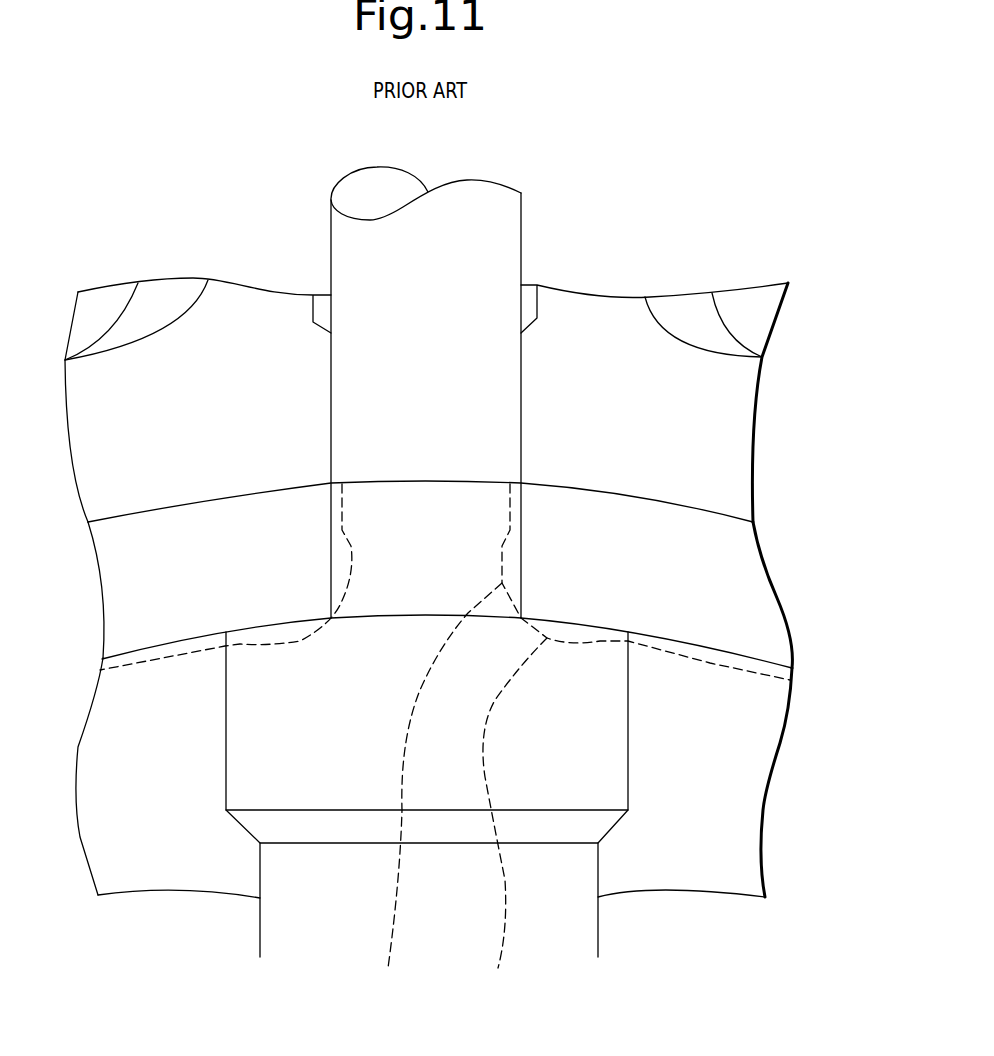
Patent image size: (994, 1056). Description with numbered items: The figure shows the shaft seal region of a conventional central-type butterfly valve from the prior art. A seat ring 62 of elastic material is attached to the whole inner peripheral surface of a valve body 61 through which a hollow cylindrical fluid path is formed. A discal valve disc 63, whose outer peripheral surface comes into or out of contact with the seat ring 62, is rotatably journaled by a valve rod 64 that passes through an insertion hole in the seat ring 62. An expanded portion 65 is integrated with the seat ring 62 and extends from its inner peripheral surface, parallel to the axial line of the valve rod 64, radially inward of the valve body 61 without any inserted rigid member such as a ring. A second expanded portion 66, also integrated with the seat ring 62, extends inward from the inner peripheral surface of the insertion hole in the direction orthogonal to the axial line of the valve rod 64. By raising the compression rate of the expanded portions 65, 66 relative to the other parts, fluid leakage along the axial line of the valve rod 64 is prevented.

The valve body 61 is at (668, 463).
The seat ring 62 is at (695, 592).
The valve disc 63 is at (688, 823).
The valve rod 64 is at (477, 260).
The expanded portion 65 is at (513, 821).
The expanded portion 66 is at (437, 793).